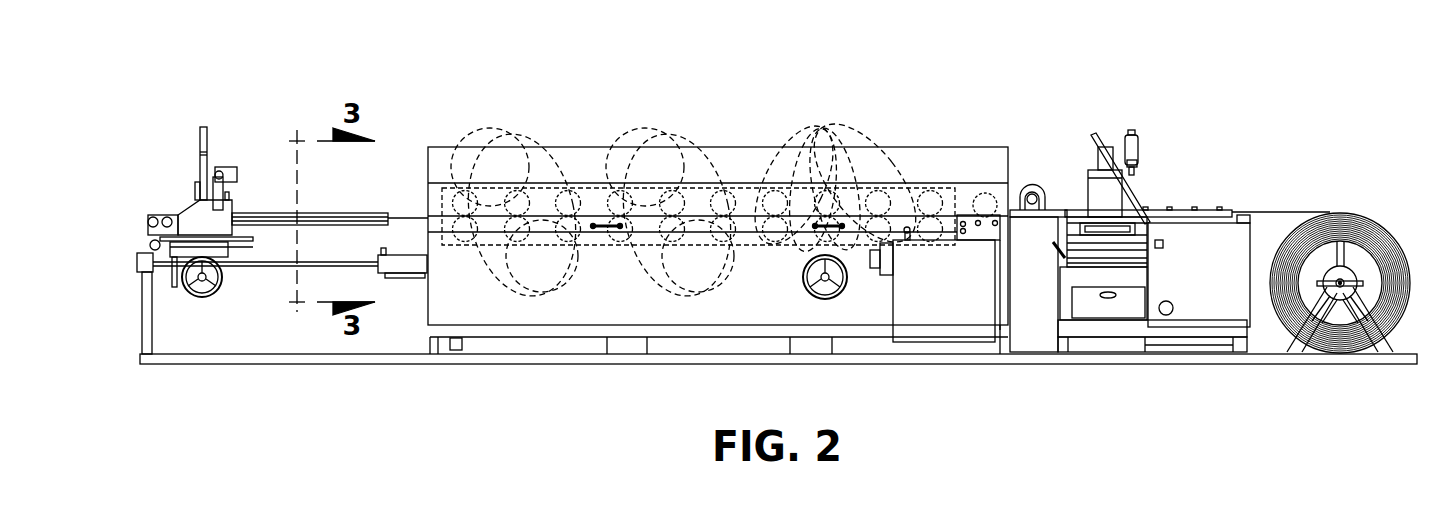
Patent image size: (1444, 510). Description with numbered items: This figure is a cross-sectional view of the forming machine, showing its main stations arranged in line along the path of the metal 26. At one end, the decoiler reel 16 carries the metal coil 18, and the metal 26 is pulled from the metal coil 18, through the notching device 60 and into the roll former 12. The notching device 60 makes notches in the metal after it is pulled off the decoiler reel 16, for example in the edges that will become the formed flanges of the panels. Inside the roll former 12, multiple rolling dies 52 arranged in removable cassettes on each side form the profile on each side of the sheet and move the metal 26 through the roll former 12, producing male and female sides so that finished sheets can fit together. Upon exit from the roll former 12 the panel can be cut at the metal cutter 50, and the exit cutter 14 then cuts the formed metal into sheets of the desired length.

The roll former 12 is at (428, 100).
The exit cutter 14 is at (150, 100).
The decoiler reel 16 is at (1363, 267).
The metal coil 18 is at (1353, 227).
The metal 26 is at (1245, 212).
The metal cutter 50 is at (973, 197).
The rolling dies 52 is at (698, 209).
The notching device 60 is at (1230, 100).